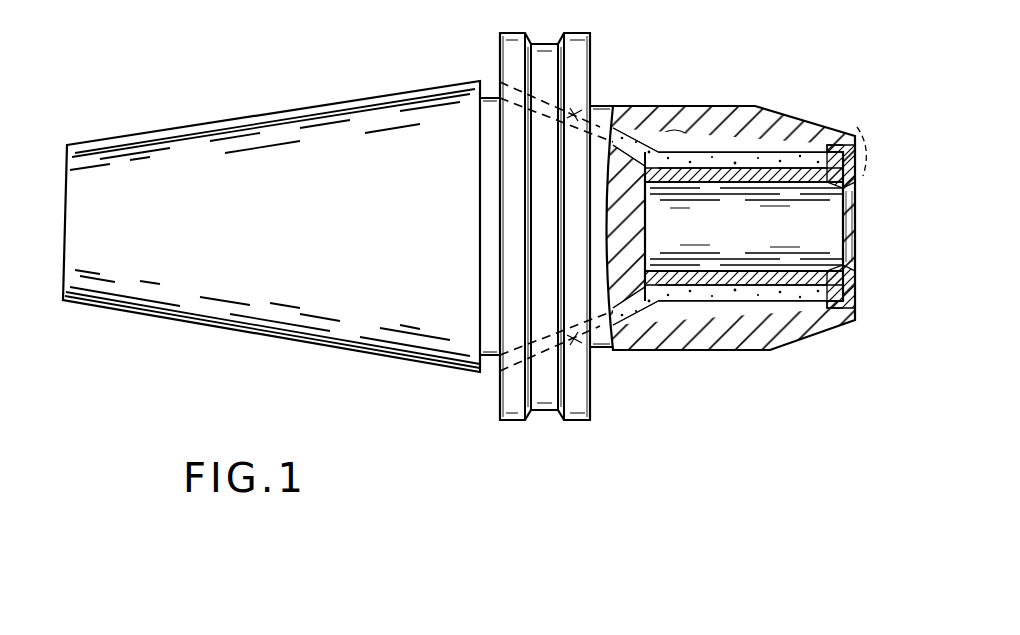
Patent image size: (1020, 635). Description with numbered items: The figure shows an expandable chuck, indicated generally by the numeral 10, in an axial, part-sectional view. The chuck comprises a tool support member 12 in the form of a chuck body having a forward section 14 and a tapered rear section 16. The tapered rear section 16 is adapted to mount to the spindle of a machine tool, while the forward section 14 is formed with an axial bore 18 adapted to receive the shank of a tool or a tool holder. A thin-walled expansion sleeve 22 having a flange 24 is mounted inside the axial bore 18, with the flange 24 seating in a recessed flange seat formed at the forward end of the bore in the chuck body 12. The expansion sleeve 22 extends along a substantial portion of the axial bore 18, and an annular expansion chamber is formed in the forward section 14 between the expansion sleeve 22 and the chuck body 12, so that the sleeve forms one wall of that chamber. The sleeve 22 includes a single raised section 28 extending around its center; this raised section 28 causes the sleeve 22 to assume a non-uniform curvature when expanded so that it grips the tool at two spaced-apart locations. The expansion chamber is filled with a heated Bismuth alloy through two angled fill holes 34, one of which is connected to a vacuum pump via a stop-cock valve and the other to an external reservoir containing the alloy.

The expandable chuck 10 is at (724, 417).
The tool support member 12 is at (568, 421).
The forward section 14 is at (743, 115).
The tapered rear section 16 is at (250, 148).
The axial bore 18 is at (861, 216).
The expansion sleeve 22 is at (677, 303).
The flange 24 is at (858, 297).
The raised section 28 is at (756, 168).
The angled fill hole 34 is at (582, 100).